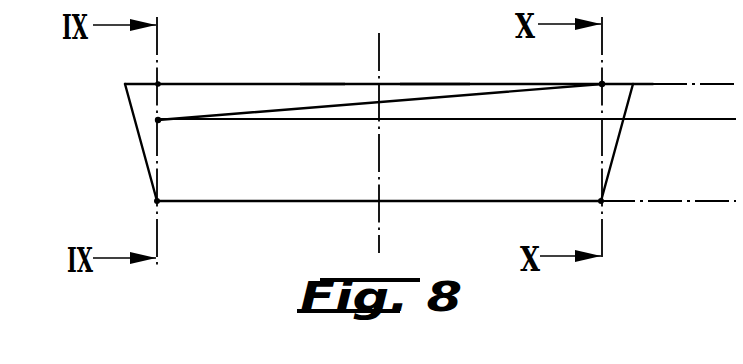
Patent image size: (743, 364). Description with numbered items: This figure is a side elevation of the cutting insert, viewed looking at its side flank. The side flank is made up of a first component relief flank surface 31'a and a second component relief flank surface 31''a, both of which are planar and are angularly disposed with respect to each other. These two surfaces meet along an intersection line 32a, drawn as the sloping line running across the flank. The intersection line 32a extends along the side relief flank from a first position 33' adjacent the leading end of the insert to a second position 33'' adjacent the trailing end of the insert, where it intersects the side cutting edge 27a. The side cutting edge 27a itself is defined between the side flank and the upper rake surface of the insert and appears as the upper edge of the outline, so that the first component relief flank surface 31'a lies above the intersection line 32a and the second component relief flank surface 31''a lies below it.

The first position 33' is at (189, 122).
The intersection line 32a is at (260, 112).
The first component relief flank surface 31'a is at (328, 69).
The side cutting edge 27a is at (433, 84).
The second component relief flank surface 31''a is at (447, 80).
The second position 33'' is at (571, 121).